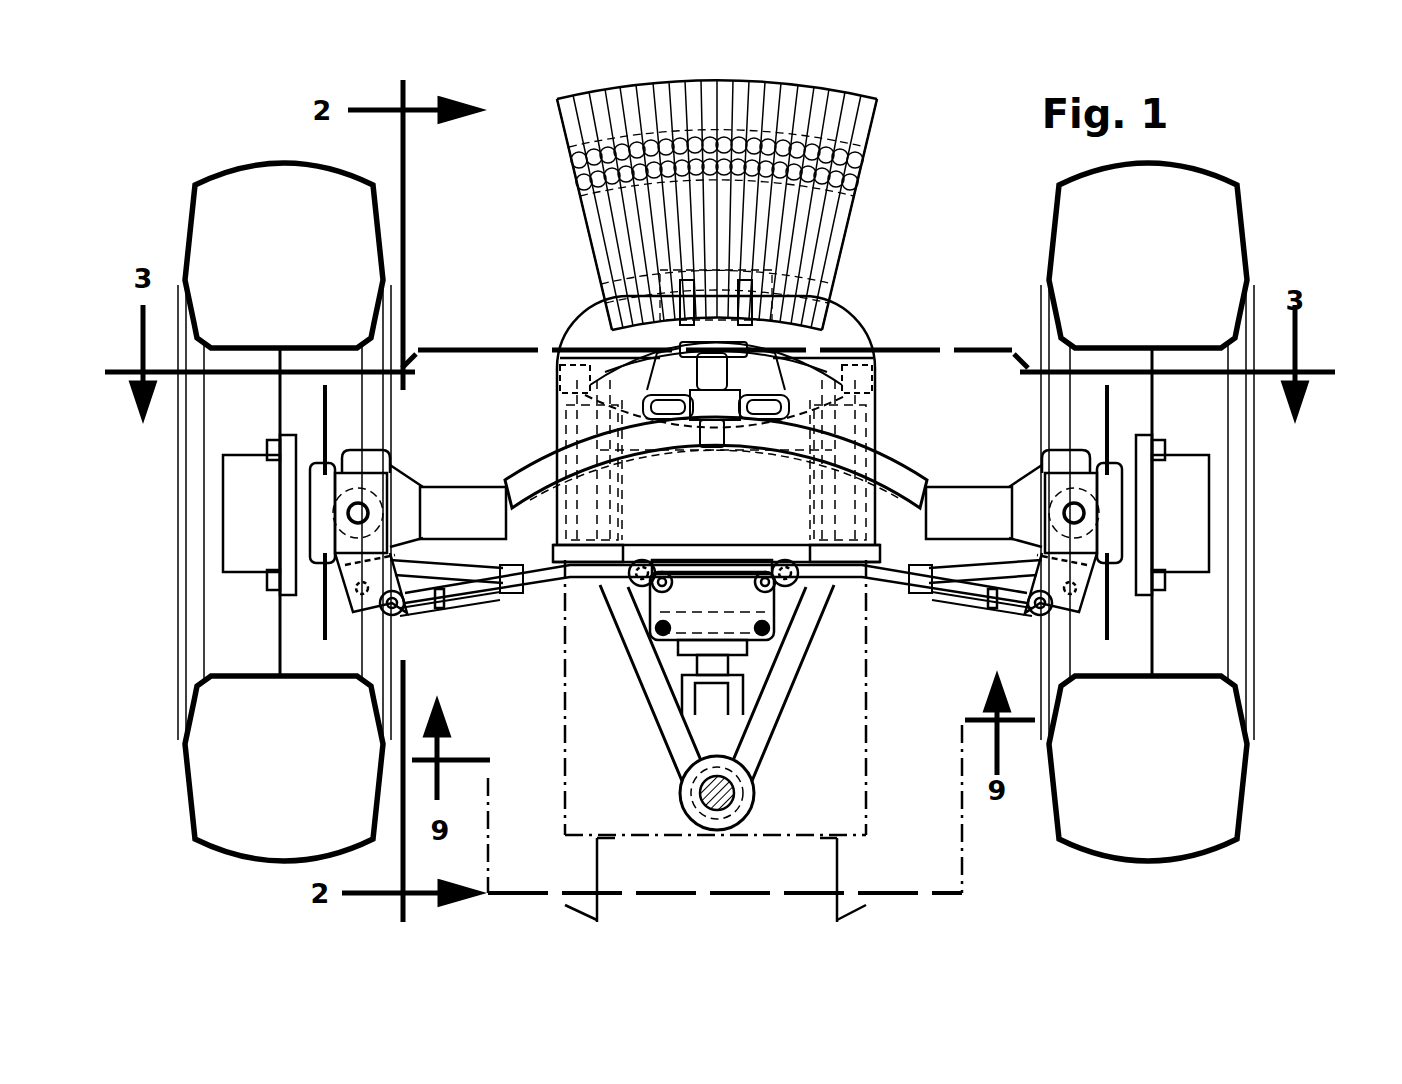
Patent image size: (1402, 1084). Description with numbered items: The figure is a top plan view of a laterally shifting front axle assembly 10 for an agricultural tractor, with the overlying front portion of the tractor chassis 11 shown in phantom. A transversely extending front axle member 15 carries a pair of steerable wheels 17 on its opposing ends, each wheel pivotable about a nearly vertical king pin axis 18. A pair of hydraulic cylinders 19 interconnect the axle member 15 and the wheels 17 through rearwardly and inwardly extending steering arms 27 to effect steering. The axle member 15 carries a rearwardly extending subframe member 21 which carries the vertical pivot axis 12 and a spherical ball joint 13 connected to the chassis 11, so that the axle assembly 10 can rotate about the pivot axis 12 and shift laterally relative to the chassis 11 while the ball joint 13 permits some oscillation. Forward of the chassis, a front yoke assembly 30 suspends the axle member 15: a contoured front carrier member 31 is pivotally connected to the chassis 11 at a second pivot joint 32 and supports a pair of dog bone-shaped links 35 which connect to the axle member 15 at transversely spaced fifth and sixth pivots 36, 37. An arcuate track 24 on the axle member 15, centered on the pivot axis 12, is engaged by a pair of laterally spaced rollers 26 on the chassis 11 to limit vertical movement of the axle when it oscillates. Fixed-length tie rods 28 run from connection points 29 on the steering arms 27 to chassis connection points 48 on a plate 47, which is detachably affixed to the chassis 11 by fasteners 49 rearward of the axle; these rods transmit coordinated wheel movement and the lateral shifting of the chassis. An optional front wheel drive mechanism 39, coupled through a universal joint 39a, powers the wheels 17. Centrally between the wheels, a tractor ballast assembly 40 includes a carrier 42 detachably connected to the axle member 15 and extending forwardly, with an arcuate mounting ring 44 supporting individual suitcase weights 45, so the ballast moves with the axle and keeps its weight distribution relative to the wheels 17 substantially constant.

The front axle assembly 10 is at (1255, 125).
The tractor chassis 11 is at (870, 880).
The vertical pivot axis 12 is at (722, 812).
The spherical ball joint 13 is at (740, 807).
The front axle member 15 is at (948, 495).
The steerable wheels 17 is at (215, 855).
The king pin axis 18 is at (345, 508).
The hydraulic cylinders 19 is at (470, 600).
The subframe member 21 is at (660, 745).
The arcuate track 24 is at (885, 470).
The rollers 26 is at (585, 450).
The steering arm 27 is at (420, 556).
The tie rods 28 is at (500, 600).
The connection point 29 is at (380, 612).
The front yoke assembly 30 is at (800, 375).
The front carrier member 31 is at (660, 340).
The second pivot joint 32 is at (716, 447).
The dog bone-shaped links 35 is at (580, 360).
The fifth pivot 36 is at (641, 404).
The sixth pivot 37 is at (787, 405).
The front wheel drive mechanism 39 is at (697, 660).
The universal joint 39a is at (682, 692).
The tractor ballast assembly 40 is at (693, 187).
The carrier 42 is at (835, 260).
The arcuate mounting ring 44 is at (620, 300).
The suitcase weights 45 is at (735, 80).
The plate 47 is at (790, 640).
The chassis connection points 48 is at (755, 575).
The fasteners 49 is at (640, 580).